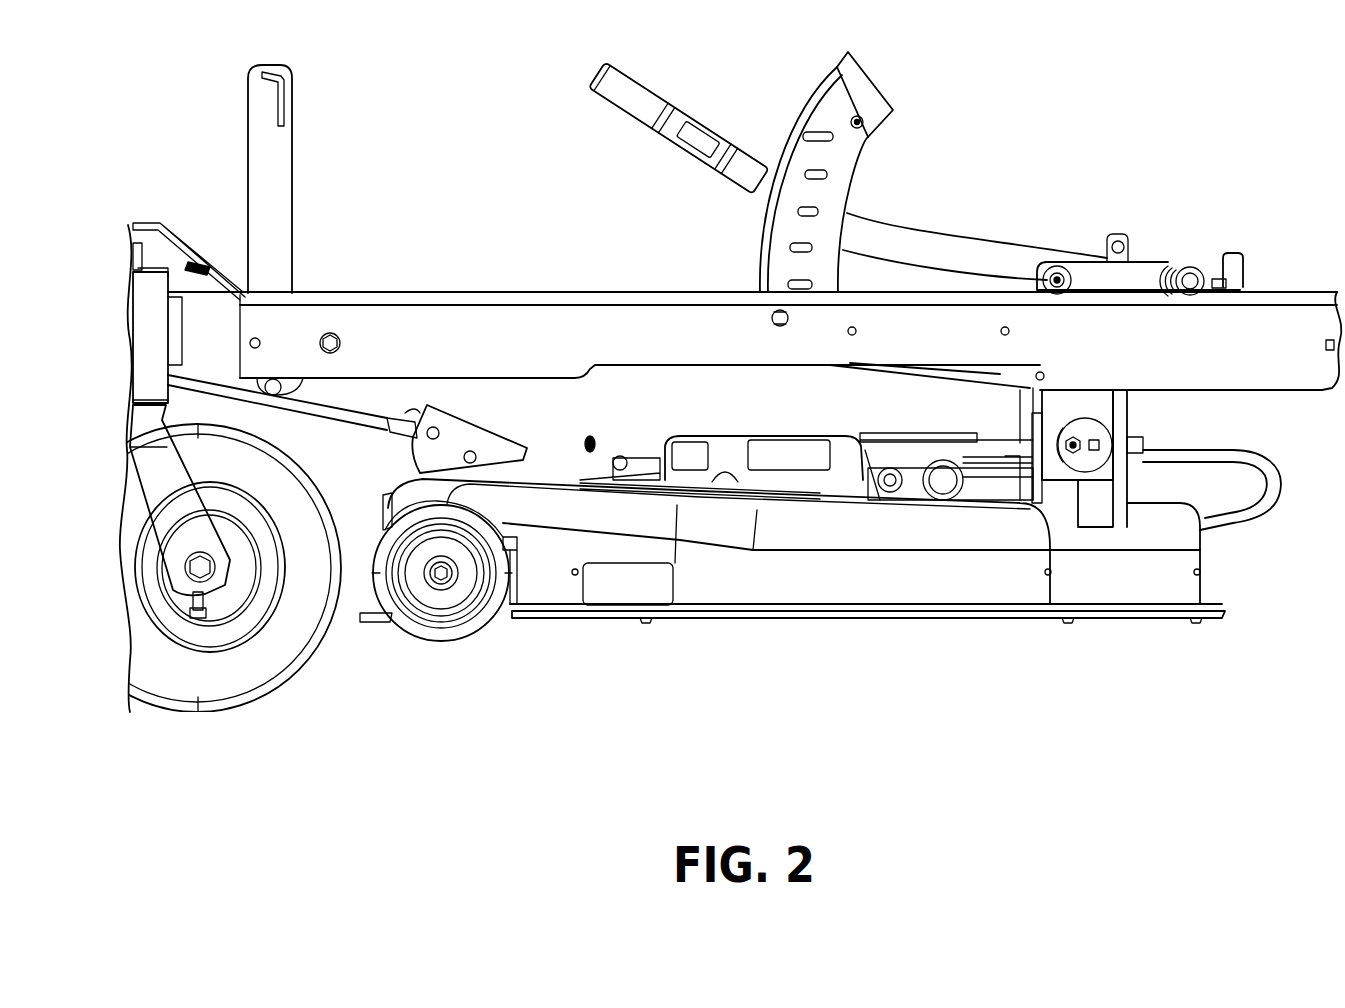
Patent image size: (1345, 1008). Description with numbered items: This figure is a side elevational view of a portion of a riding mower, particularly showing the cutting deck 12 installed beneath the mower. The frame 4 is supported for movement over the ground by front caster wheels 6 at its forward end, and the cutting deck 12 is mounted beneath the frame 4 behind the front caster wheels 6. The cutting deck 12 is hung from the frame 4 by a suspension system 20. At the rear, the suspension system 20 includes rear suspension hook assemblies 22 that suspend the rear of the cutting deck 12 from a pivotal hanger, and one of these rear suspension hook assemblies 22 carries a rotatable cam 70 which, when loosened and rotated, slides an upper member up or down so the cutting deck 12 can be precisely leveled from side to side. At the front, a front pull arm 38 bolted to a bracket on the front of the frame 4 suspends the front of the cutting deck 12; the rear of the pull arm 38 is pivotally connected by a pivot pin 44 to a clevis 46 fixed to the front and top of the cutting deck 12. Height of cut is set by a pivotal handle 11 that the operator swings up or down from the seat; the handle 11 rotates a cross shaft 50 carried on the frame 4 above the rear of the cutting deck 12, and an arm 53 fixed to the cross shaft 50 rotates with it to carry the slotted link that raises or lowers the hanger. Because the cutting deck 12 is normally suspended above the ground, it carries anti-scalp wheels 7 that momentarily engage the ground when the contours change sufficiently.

The frame 4 is at (447, 320).
The front caster wheel 6 is at (267, 668).
The anti-scalp wheel 7 is at (438, 636).
The pivotal handle 11 is at (648, 100).
The cutting deck 12 is at (880, 588).
The suspension system 20 is at (590, 452).
The rear suspension hook assembly 22 is at (1139, 410).
The front pull arm 38 is at (317, 412).
The pivot pin 44 is at (428, 437).
The clevis 46 is at (468, 433).
The cross shaft 50 is at (1192, 282).
The arm 53 is at (1115, 275).
The rotatable cam 70 is at (1086, 410).